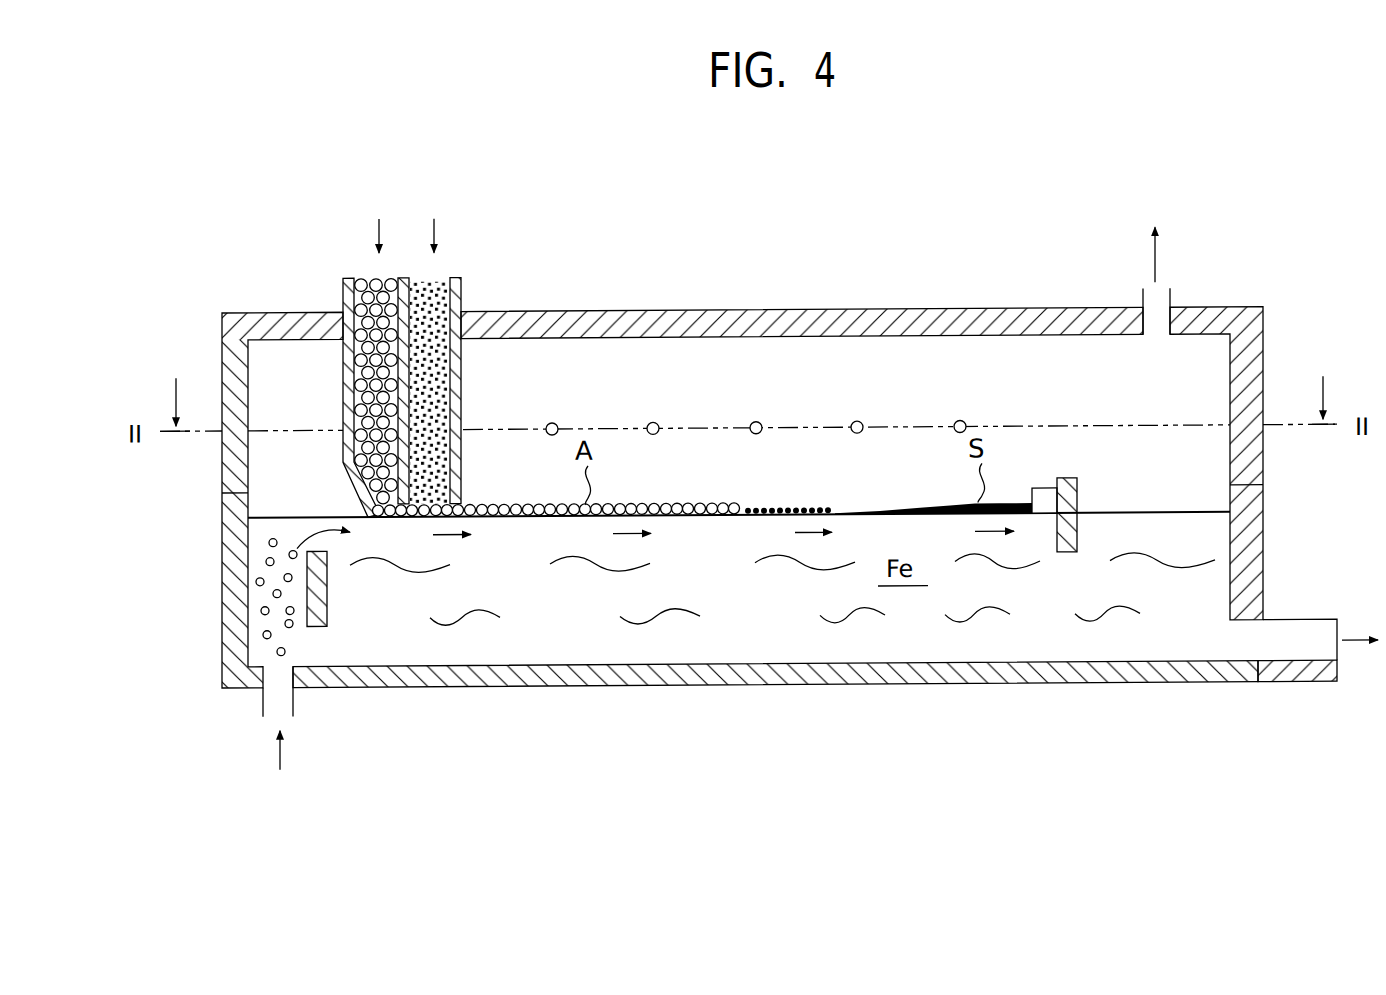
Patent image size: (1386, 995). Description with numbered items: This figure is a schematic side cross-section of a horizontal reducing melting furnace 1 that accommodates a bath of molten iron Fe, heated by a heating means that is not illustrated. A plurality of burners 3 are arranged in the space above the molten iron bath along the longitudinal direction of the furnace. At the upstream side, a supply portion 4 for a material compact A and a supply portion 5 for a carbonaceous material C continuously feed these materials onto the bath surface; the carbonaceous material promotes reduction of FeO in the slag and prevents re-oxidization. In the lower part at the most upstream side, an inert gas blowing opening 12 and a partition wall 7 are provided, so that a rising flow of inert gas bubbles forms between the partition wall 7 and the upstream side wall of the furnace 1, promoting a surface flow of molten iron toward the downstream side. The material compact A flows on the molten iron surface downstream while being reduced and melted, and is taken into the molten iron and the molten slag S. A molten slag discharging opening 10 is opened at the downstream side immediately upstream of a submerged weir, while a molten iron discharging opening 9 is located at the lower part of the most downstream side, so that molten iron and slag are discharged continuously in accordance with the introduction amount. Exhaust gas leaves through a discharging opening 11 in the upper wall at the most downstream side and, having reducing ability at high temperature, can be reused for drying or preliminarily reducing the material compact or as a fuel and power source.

The horizontal reducing melting furnace 1 is at (222, 575).
The burners 3 is at (653, 424).
The supply portion for material compact 4 is at (343, 390).
The supply portion for carbonaceous material 5 is at (463, 379).
The partition wall 7 is at (330, 591).
The molten iron discharging opening 9 is at (1300, 626).
The molten slag discharging opening 10 is at (1041, 495).
The exhaust gas discharging opening 11 is at (1142, 305).
The inert gas blowing opening 12 is at (293, 695).